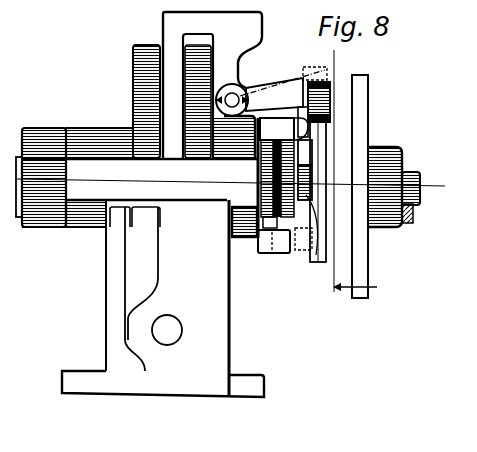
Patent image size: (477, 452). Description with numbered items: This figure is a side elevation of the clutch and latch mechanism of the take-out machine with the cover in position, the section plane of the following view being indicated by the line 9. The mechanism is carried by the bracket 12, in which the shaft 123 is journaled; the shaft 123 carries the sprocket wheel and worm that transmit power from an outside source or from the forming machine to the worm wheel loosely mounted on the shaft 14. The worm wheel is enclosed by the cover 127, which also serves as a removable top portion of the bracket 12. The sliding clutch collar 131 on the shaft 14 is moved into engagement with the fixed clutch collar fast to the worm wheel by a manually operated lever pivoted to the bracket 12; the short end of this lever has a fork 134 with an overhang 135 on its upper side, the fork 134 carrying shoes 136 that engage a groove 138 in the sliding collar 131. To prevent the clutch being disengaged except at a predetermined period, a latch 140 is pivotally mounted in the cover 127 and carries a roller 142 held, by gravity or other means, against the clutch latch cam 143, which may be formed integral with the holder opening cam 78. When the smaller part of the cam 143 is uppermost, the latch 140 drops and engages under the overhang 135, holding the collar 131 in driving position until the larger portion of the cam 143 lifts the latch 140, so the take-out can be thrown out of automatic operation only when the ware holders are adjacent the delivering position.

The bracket 12 is at (112, 324).
The shaft 14 is at (408, 172).
The holder opening cam 78 is at (368, 272).
The shaft 123 is at (160, 333).
The cover 127 is at (140, 68).
The sliding clutch collar 131 is at (257, 189).
The fork 134 is at (280, 244).
The overhang 135 is at (300, 138).
The shoes 136 is at (235, 219).
The groove 138 is at (262, 171).
The latch 140 is at (298, 124).
The roller 142 is at (312, 99).
The clutch latch cam 143 is at (318, 262).
The section line 9- 9 is at (349, 183).